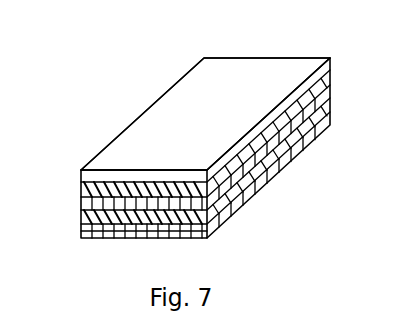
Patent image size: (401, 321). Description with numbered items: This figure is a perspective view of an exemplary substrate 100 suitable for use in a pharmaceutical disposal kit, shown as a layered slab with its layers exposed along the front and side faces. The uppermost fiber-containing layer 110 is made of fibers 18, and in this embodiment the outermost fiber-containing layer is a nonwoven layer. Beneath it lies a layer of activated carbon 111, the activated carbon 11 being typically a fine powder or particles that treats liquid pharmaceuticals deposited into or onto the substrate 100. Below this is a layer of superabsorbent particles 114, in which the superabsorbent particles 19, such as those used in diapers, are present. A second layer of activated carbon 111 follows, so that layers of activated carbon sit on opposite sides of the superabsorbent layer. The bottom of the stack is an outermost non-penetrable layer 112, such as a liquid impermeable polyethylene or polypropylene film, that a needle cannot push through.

The substrate 100 is at (167, 65).
The fibers 18 is at (288, 73).
The activated carbon 11 is at (330, 87).
The superabsorbent particles 19 is at (330, 98).
The fiber-containing layer 110 is at (81, 176).
The layer of activated carbon 111 is at (81, 189).
The layer of superabsorbent particles 114 is at (81, 204).
The outermost non-penetrable layer 112 is at (81, 231).